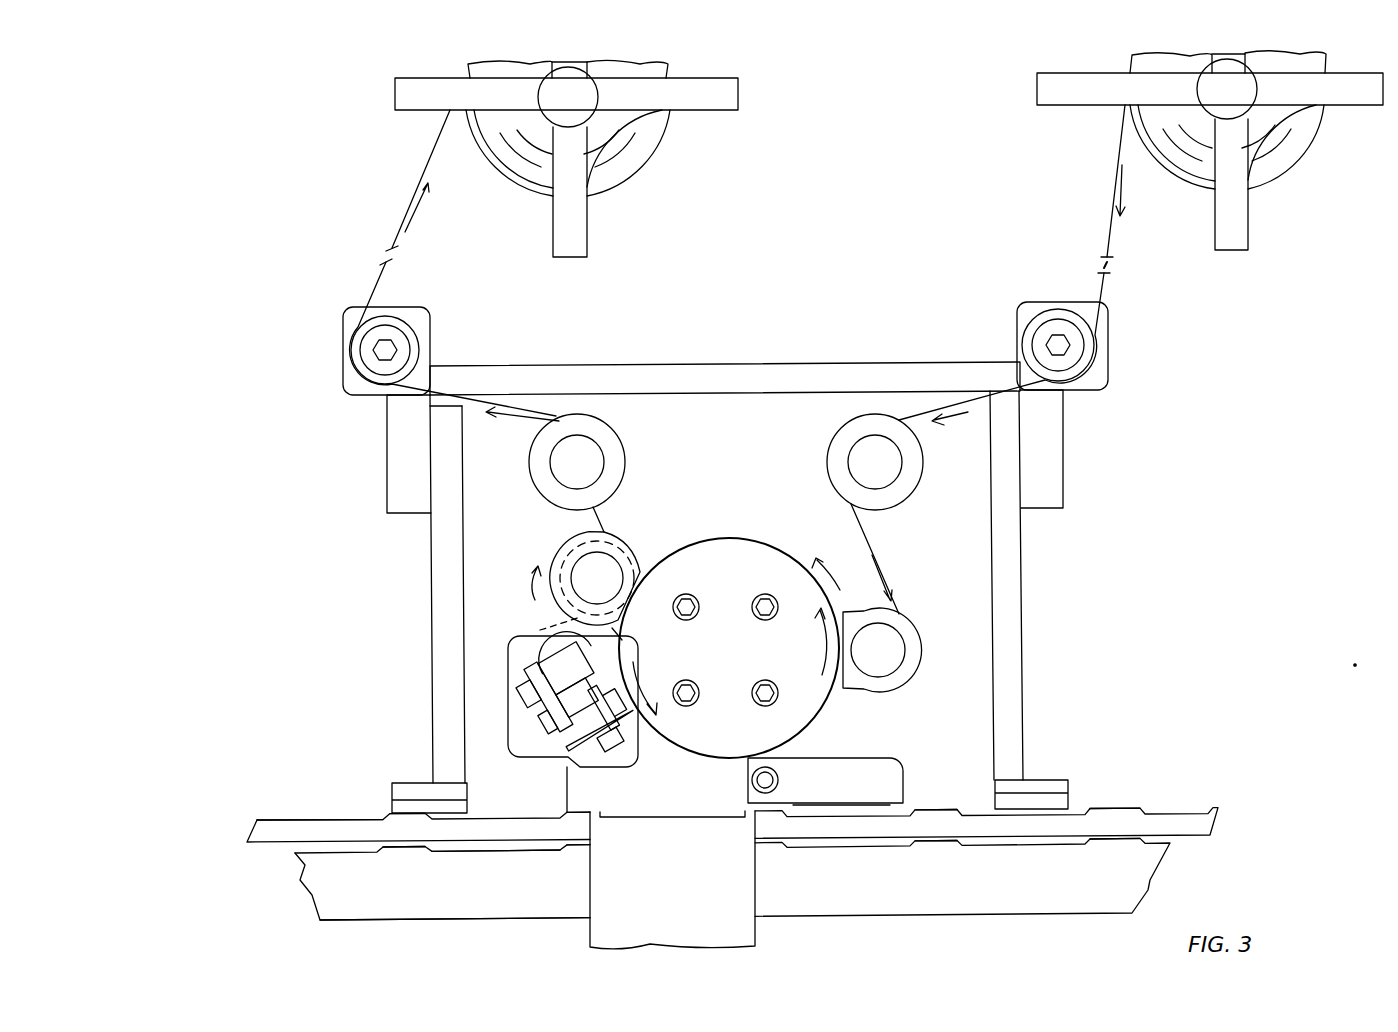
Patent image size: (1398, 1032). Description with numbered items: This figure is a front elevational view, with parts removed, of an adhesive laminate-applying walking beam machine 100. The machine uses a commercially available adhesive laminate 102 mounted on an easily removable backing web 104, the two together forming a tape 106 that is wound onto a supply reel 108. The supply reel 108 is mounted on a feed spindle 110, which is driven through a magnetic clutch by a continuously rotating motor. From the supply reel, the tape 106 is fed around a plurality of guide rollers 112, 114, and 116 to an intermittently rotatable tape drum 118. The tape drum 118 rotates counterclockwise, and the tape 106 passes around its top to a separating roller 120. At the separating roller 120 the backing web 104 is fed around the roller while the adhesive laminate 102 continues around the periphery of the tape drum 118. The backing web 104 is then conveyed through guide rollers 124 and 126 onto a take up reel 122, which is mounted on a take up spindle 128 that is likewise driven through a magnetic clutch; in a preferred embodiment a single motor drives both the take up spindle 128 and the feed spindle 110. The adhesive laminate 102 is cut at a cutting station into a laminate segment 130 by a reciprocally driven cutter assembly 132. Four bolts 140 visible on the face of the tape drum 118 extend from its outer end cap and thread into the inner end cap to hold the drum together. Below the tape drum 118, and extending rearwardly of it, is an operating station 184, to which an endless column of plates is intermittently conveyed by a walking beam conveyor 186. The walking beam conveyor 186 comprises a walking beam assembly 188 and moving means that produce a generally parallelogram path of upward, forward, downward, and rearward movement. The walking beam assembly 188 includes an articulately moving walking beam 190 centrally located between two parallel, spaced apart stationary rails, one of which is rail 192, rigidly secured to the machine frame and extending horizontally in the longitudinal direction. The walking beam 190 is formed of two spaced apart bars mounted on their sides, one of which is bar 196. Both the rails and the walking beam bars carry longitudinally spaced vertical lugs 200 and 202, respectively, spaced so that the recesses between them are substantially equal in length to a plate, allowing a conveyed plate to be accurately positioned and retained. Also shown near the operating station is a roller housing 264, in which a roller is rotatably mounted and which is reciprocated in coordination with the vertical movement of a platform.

The laminate applying machine 100 is at (343, 566).
The adhesive laminate 102 is at (1105, 278).
The backing web 104 is at (422, 180).
The tape 106 is at (1112, 180).
The supply reel 108 is at (1325, 128).
The feed spindle 110 is at (1250, 100).
The guide roller 112 is at (1035, 325).
The guide roller 114 is at (845, 426).
The guide roller 116 is at (920, 633).
The tape drum 118 is at (823, 712).
The separating roller 120 is at (625, 545).
The take up reel 122 is at (638, 168).
The guide roller 124 is at (622, 443).
The guide roller 126 is at (430, 323).
The take up spindle 128 is at (590, 97).
The laminate segment 130 is at (667, 750).
The cutter assembly 132 is at (511, 716).
The bolts 140 is at (752, 692).
The operating station 184 is at (786, 936).
The walking beam conveyor 186 is at (270, 858).
The walking beam assembly 188 is at (293, 901).
The walking beam 190 is at (335, 932).
The stationary rail 192 is at (257, 825).
The walking beam bar 196 is at (496, 880).
The vertical lugs 200 is at (383, 813).
The vertical lugs 202 is at (383, 850).
The roller housing 264 is at (825, 781).